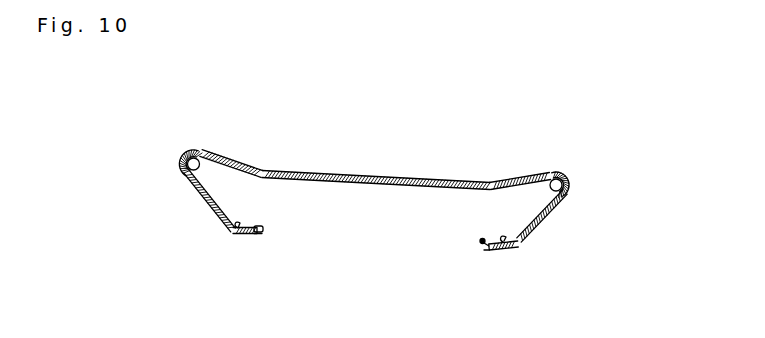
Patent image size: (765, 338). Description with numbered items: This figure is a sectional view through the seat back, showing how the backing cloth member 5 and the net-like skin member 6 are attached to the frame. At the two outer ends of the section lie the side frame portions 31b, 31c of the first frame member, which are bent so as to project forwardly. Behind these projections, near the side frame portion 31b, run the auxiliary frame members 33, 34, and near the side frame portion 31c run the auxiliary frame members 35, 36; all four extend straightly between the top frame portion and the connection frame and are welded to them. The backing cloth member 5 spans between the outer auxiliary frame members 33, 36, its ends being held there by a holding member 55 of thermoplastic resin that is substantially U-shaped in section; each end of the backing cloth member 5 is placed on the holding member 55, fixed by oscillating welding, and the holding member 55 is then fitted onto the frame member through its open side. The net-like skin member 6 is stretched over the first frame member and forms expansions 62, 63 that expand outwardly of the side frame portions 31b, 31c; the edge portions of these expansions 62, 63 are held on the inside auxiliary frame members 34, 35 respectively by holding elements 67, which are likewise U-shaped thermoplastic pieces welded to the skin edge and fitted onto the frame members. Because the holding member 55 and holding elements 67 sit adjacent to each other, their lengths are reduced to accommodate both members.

The backing cloth member 5 is at (347, 195).
The net-like skin member 6 is at (320, 168).
The side frame portion 31b is at (194, 151).
The side frame portion 31c is at (569, 172).
The auxiliary frame member 33 is at (232, 236).
The auxiliary frame member 34 is at (262, 226).
The auxiliary frame member 35 is at (483, 238).
The auxiliary frame member 36 is at (520, 243).
The holding member 55 is at (241, 221).
The expansion 62 is at (203, 204).
The expansion 63 is at (547, 216).
The holding element 67 is at (262, 234).